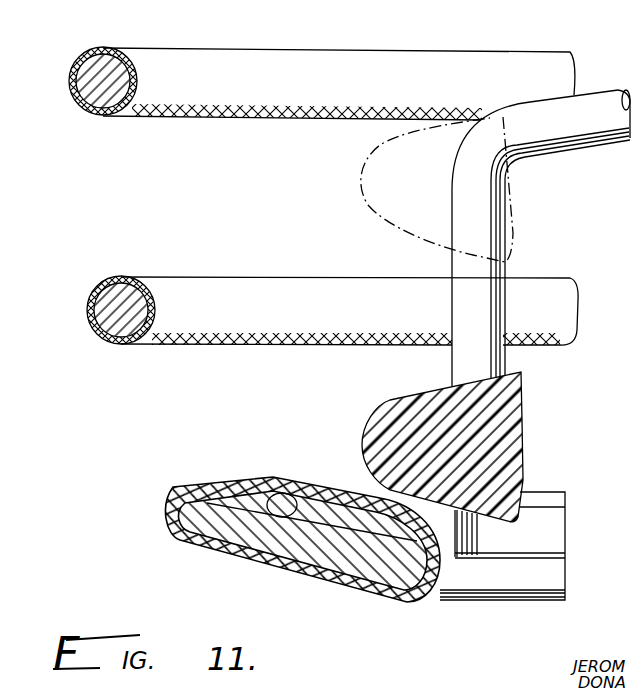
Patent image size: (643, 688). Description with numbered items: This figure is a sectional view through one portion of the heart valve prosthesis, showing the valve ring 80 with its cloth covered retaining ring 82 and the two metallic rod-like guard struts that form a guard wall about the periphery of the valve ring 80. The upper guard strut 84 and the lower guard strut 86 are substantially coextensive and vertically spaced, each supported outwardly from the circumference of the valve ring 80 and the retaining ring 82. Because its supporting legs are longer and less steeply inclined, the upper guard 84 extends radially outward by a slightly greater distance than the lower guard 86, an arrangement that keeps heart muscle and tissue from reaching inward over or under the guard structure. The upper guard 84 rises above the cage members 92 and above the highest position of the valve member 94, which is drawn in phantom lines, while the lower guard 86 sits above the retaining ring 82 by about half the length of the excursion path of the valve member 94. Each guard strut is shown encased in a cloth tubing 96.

The valve ring 80 is at (560, 528).
The cloth covered retaining ring 82 is at (322, 492).
The upper guard strut 84 is at (85, 78).
The lower guard strut 86 is at (100, 306).
The cage members 92 is at (597, 100).
The valve member 94 is at (513, 232).
The cloth tubing 96 is at (200, 54).